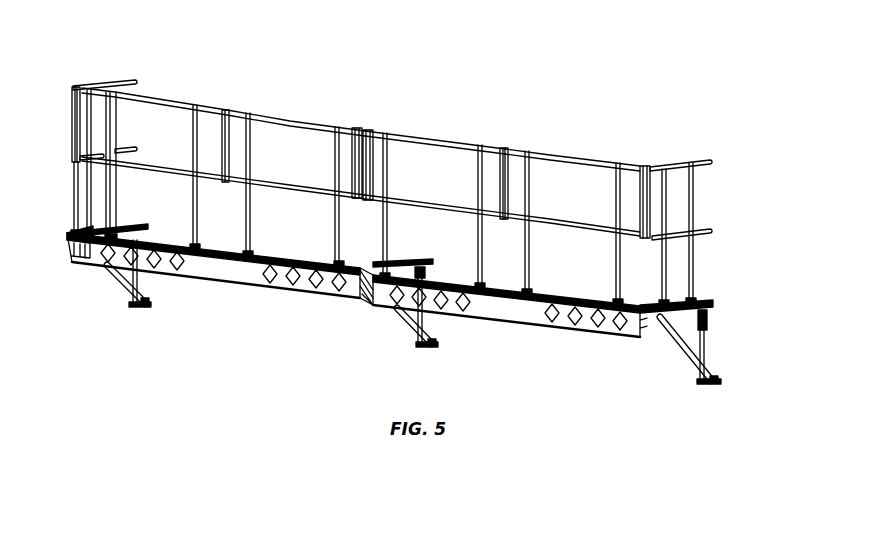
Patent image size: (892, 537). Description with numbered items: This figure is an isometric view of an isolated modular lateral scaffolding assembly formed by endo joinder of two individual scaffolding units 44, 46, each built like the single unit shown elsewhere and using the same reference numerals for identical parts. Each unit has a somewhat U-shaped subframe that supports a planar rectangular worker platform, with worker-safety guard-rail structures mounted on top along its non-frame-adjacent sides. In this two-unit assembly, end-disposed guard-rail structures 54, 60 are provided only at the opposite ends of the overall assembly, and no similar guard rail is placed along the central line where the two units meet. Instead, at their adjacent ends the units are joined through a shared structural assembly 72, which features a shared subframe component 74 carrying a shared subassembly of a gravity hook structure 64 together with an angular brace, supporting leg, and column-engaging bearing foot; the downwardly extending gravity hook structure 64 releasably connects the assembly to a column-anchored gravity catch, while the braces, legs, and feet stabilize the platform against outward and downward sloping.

The scaffolding unit 44 is at (238, 90).
The scaffolding unit 46 is at (524, 126).
The guard-rail structure 54 is at (106, 80).
The guard-rail structure 60 is at (694, 202).
The gravity hook structure 64 is at (718, 320).
The shared structural assembly 72 is at (415, 338).
The shared subframe component 74 is at (410, 263).